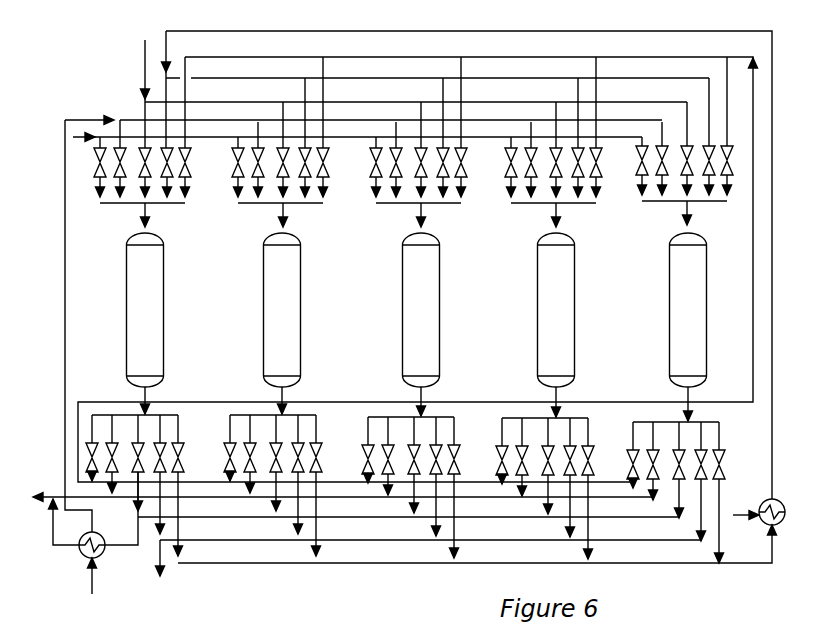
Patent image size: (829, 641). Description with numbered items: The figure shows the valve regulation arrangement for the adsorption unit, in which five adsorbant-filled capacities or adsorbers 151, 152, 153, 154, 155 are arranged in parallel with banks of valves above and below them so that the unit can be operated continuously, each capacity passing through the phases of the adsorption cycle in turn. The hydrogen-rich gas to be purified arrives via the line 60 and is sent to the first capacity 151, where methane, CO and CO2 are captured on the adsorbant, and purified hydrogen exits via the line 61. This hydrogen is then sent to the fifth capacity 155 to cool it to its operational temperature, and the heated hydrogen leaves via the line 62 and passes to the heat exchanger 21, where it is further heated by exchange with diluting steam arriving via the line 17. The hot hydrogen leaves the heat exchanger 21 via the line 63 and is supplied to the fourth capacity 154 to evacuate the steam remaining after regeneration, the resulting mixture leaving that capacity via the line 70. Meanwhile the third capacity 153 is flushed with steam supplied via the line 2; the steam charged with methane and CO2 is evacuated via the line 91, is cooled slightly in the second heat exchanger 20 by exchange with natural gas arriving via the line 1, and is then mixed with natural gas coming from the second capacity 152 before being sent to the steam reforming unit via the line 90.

The line 1 is at (360, 315).
The line 2 is at (404, 94).
The line 17 is at (756, 518).
The second heat exchanger 20 is at (82, 554).
The heat exchanger 21 is at (764, 501).
The line 60 is at (356, 153).
The line 61 is at (418, 258).
The line 62 is at (477, 546).
The line 63 is at (467, 265).
The line 70 is at (147, 565).
The line 90 is at (343, 488).
The line 91 is at (94, 515).
The first capacity 151 is at (145, 345).
The second capacity 152 is at (285, 340).
The third capacity 153 is at (418, 340).
The fourth capacity 154 is at (557, 340).
The fifth capacity 155 is at (688, 340).